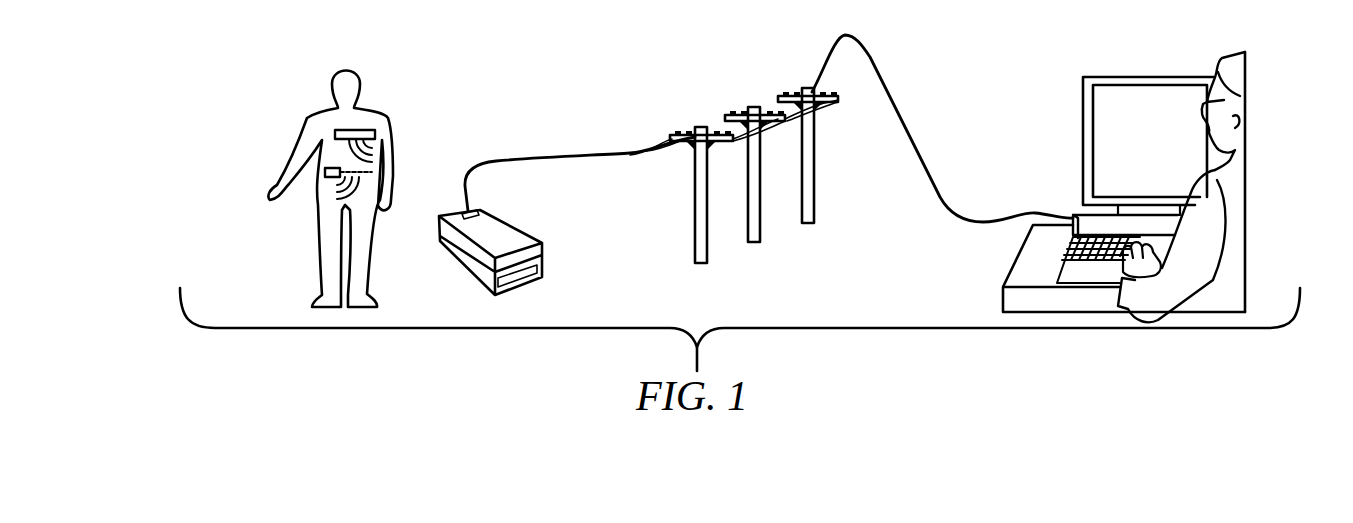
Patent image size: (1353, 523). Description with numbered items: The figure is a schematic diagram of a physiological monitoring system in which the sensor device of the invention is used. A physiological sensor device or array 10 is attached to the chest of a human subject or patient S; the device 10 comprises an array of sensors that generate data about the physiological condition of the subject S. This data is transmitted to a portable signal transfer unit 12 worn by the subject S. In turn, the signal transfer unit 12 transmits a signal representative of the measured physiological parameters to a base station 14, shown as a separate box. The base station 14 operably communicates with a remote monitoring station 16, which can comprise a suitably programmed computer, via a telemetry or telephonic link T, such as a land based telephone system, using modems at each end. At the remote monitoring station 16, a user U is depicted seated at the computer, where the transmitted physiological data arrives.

The physiological sensor device or array 10 is at (362, 130).
The portable signal transfer unit 12 is at (325, 168).
The base station 14 is at (494, 236).
The remote monitoring station 16 is at (1064, 191).
The human subject or patient S is at (330, 226).
The telemetry or telephonic link T is at (786, 249).
The user U is at (1218, 231).